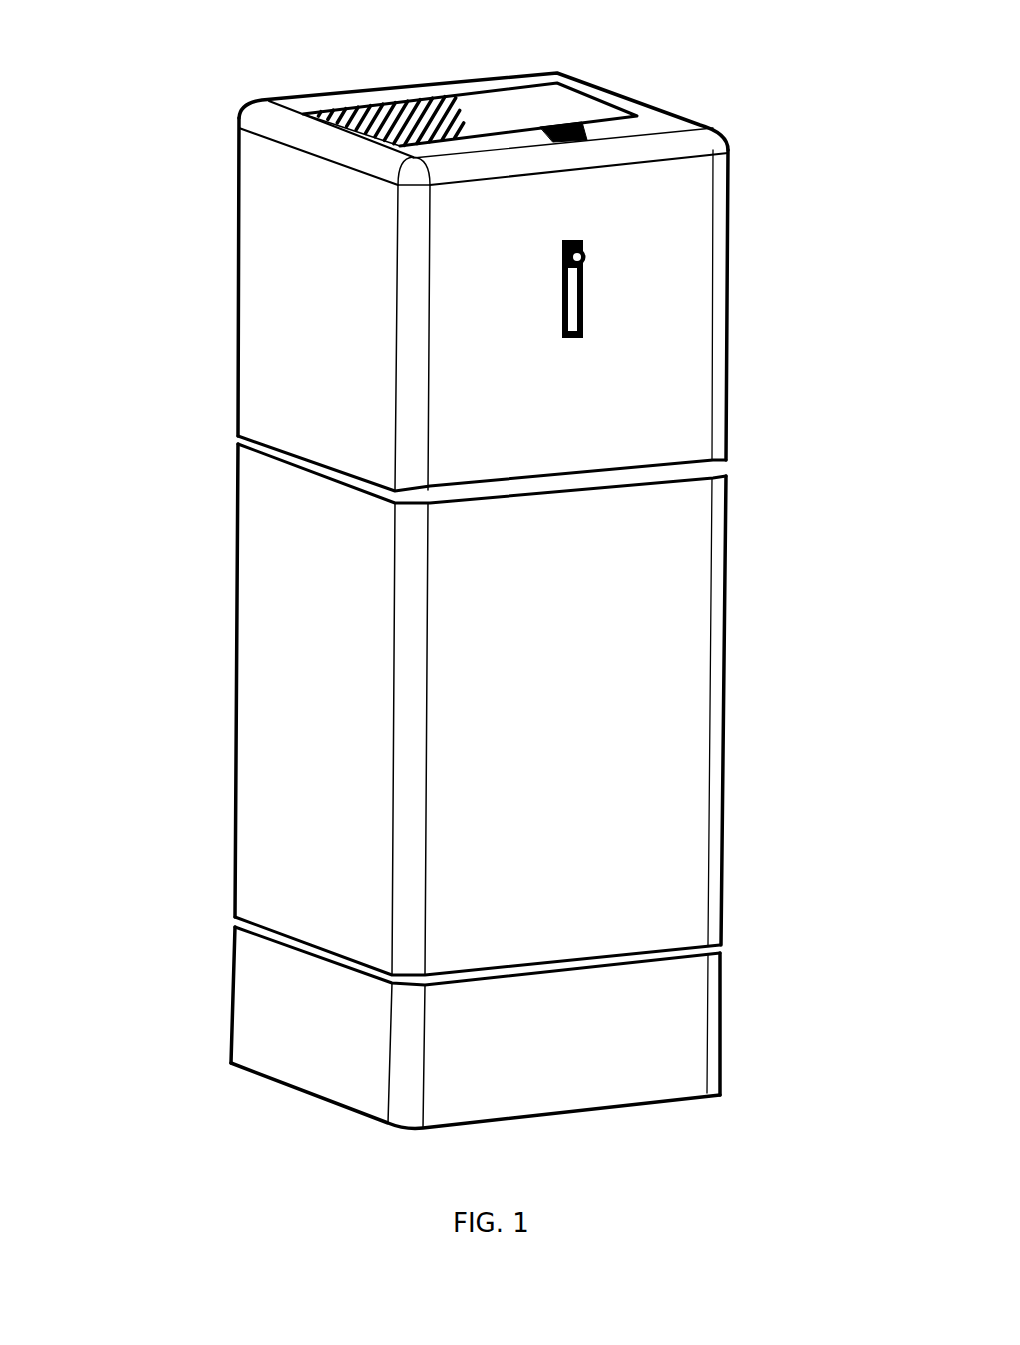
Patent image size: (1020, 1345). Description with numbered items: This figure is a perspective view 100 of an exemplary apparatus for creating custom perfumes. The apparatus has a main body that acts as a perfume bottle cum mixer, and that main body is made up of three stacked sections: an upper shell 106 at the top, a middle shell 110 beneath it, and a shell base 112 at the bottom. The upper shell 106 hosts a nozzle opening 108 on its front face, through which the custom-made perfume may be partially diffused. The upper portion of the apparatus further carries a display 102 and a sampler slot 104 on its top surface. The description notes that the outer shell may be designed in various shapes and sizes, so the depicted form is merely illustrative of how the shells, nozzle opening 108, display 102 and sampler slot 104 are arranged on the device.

The perspective view 100 is at (464, 610).
The display 102 is at (550, 97).
The sampler slot 104 is at (590, 136).
The upper shell 106 is at (434, 248).
The nozzle opening 108 is at (590, 250).
The middle shell 110 is at (668, 612).
The shell base 112 is at (668, 995).